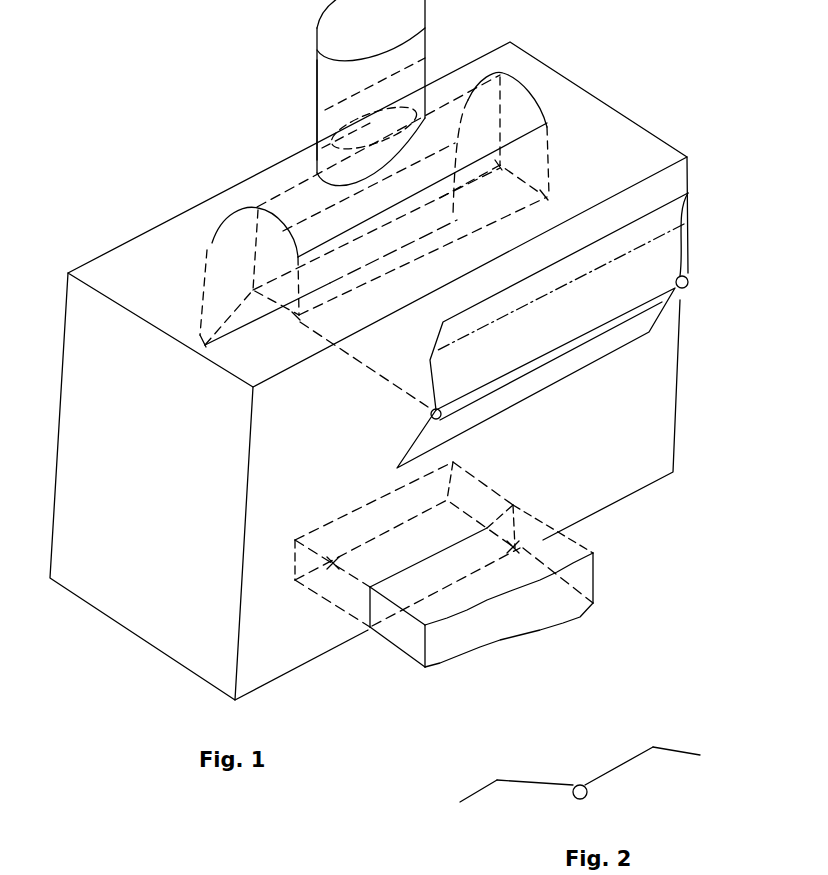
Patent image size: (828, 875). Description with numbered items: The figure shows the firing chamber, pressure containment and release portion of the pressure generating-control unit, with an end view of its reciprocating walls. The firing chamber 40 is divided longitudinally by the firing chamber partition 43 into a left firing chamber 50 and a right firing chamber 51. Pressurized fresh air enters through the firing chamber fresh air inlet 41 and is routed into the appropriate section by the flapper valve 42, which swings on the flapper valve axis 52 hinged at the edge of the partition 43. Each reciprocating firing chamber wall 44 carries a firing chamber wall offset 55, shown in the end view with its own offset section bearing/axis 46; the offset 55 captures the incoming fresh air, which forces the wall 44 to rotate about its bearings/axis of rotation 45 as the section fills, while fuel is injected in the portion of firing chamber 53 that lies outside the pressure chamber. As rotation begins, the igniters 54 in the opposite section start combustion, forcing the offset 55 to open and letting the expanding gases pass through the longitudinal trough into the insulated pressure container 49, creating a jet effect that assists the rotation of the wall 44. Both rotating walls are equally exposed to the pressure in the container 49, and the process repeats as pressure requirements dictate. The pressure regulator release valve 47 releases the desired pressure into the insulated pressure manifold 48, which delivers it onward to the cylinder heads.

In FIG. 1, the firing chamber 40 is at (297, 232).
In FIG. 1, the firing chamber fresh air inlet 41 is at (427, 30).
In FIG. 1, the flapper valve 42 is at (327, 127).
In FIG. 1, the firing chamber partition 43 is at (266, 253).
In FIG. 1, the reciprocating firing chamber walls 44 is at (567, 375).
In FIG. 2, the reciprocating firing chamber walls 44 is at (630, 762).
In FIG. 1, the reciprocating firing chamber walls bearings/axis of rotation 45 is at (690, 282).
In FIG. 2, the reciprocating firing chamber walls bearings/axis of rotation 45 is at (587, 792).
In FIG. 1, the reciprocating firing chamber wall offset section bearing/axis 46 is at (492, 330).
In FIG. 2, the reciprocating firing chamber wall offset section bearing/axis 46 is at (497, 780).
In FIG. 1, the pressure regulator release valve 47 is at (333, 602).
In FIG. 1, the insulated pressure manifold 48 is at (527, 622).
In FIG. 1, the insulated pressure container 49 is at (118, 612).
In FIG. 1, the left firing chamber 50 is at (213, 293).
In FIG. 1, the right firing chamber 51 is at (537, 138).
In FIG. 1, the firing chamber fresh air inlet flapper valve axis 52 is at (400, 135).
In FIG. 1, the portion of firing chamber where fuel injection components are located 53 is at (528, 106).
In FIG. 1, the igniters 54 is at (212, 345).
In FIG. 2, the firing chamber wall offset 55 is at (460, 802).